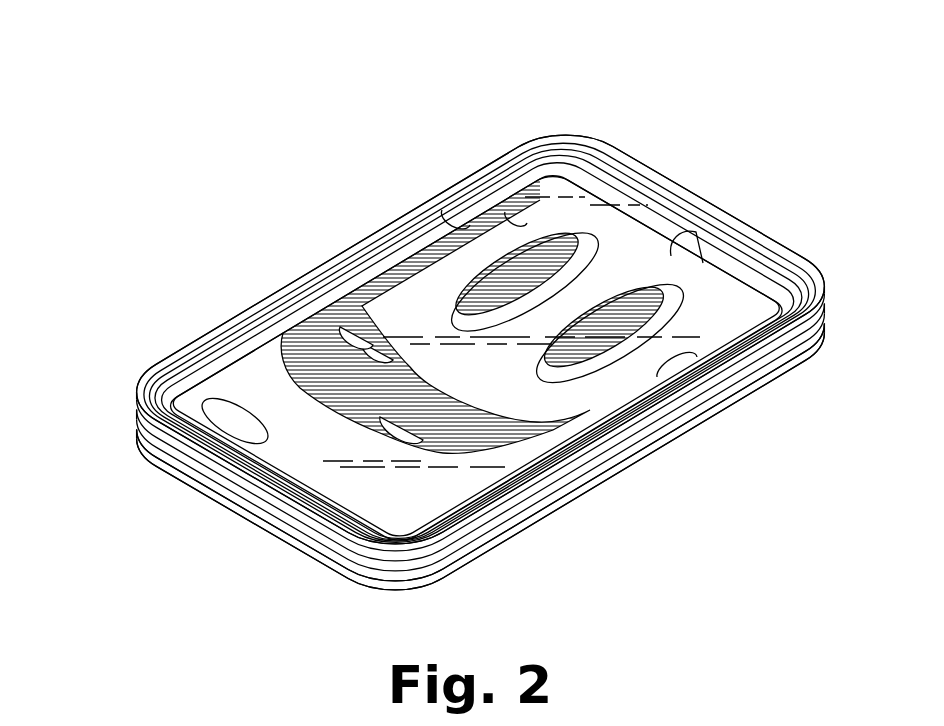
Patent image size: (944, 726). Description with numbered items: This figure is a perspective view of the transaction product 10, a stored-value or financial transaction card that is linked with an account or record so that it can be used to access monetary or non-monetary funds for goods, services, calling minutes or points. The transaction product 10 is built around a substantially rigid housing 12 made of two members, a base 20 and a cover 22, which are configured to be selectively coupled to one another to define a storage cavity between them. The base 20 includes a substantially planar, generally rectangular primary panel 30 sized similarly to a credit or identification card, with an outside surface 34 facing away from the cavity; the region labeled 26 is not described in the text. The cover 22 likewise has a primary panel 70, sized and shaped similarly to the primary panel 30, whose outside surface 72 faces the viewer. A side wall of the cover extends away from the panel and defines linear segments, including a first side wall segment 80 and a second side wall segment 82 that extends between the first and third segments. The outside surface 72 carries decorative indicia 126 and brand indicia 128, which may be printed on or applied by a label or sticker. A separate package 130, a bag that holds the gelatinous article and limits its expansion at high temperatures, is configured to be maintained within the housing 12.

The transaction product 10 is at (437, 78).
The housing 12 is at (141, 357).
The base 20 is at (117, 438).
The cover 22 is at (124, 389).
The middle layer edge 26 is at (229, 483).
The primary panel 30 is at (521, 527).
The outside surface 34 is at (625, 462).
The primary panel 70 is at (578, 135).
The outside surface 72 is at (553, 185).
The first side wall segment 80 is at (762, 357).
The second side wall segment 82 is at (333, 540).
The decorative indicia 126 is at (484, 276).
The brand indicia 128 is at (213, 428).
The package 130 is at (197, 383).